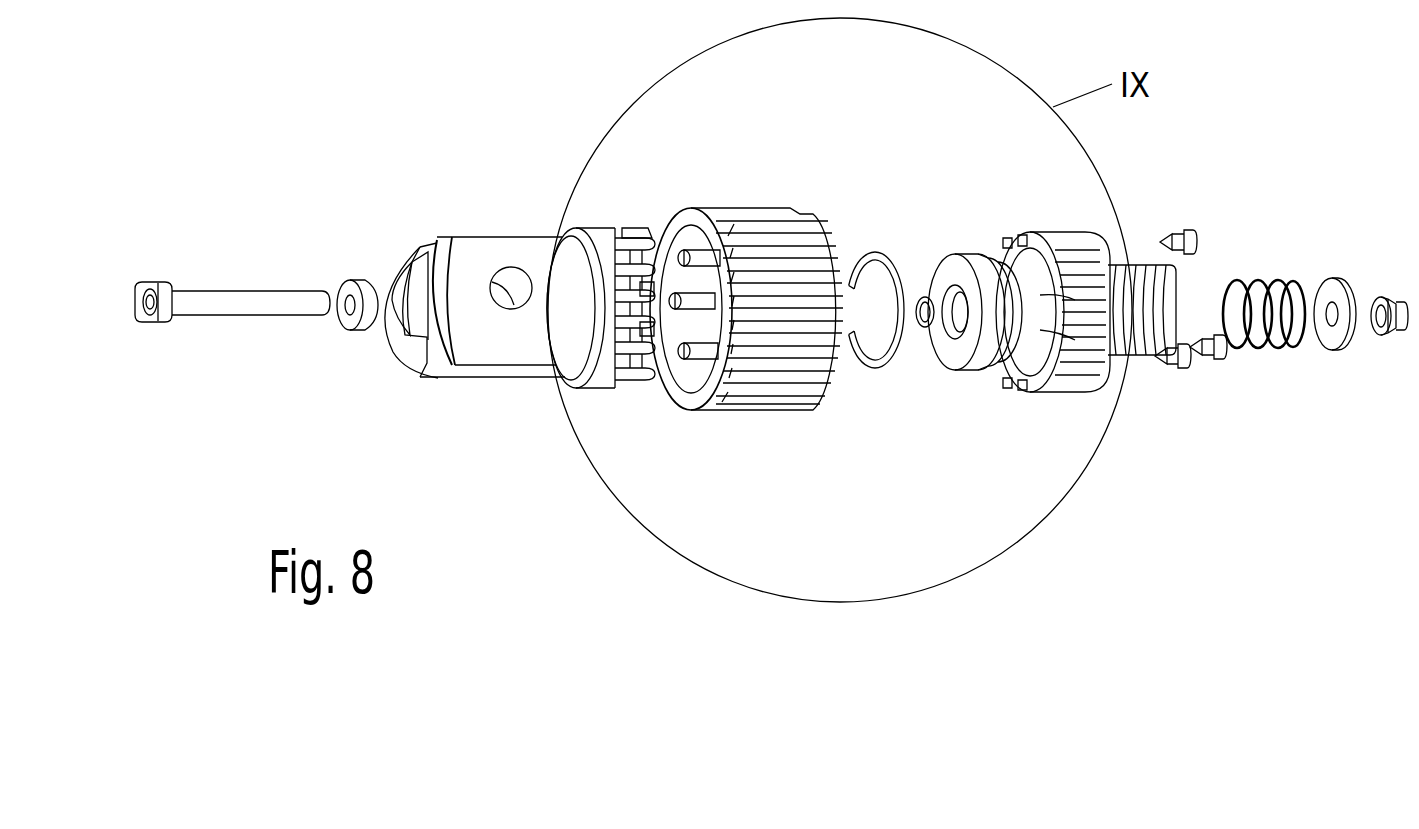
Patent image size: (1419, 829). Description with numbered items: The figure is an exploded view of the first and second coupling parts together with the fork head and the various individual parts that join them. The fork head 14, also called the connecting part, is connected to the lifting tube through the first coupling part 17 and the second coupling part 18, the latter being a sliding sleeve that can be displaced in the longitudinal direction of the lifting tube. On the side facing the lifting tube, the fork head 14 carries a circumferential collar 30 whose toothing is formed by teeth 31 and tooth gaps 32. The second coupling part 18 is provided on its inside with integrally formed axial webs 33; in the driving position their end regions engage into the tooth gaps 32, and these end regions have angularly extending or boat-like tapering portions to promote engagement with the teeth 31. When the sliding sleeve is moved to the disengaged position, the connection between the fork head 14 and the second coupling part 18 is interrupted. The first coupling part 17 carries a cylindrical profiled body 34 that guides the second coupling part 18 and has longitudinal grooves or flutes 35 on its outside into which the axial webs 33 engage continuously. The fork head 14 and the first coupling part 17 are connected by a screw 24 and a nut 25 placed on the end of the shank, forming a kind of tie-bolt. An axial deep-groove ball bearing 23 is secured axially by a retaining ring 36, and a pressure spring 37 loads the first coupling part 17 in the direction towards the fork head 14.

The fork head 14 is at (470, 262).
The first coupling part 17 is at (1068, 218).
The second coupling part 18 is at (746, 205).
The axial deep-groove ball bearing 23 is at (955, 345).
The screw 24 is at (228, 300).
The nut 25 is at (1382, 300).
The circumferential collar 30 is at (606, 258).
The teeth 31 is at (636, 236).
The tooth gaps 32 is at (652, 322).
The axial webs 33 is at (698, 345).
The cylindrical profiled body 34 is at (1070, 394).
The grooves or flutes 35 is at (998, 368).
The retaining ring 36 is at (873, 254).
The pressure spring 37 is at (1258, 285).